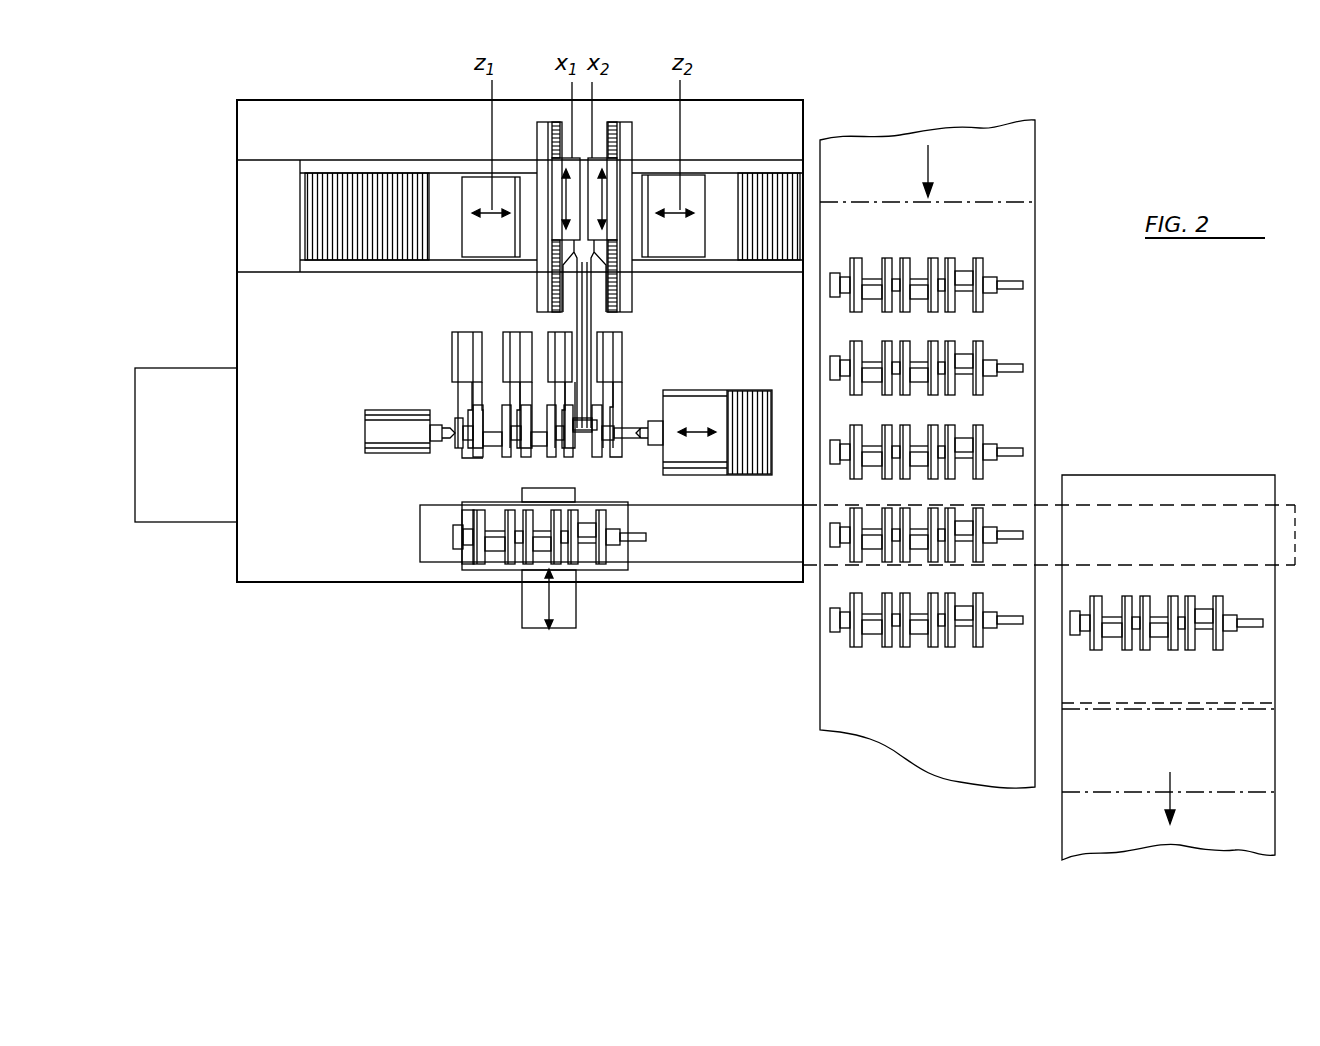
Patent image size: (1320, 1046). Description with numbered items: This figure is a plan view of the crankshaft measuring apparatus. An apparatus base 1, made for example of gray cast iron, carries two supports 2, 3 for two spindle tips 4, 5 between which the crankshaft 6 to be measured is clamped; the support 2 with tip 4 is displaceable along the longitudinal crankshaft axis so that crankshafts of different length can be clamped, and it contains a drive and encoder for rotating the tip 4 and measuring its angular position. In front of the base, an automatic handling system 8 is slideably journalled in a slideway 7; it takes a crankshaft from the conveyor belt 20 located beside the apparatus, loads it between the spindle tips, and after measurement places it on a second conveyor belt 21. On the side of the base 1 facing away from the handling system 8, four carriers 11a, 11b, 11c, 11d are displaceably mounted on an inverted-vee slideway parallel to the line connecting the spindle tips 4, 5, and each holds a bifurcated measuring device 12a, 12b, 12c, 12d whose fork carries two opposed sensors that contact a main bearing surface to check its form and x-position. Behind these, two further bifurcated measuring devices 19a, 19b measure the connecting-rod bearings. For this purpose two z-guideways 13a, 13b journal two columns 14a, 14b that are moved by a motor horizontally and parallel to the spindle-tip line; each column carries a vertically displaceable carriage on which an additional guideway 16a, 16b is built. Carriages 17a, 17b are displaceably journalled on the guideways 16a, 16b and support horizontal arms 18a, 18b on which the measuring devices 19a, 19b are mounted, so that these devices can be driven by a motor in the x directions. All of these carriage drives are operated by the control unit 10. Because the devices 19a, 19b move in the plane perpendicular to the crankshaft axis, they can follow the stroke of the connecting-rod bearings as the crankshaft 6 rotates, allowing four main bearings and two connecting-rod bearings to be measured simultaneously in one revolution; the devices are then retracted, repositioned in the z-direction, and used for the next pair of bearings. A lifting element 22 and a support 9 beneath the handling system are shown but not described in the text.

The apparatus base 1 is at (793, 118).
The support 2 is at (710, 392).
The support 3 is at (375, 425).
The spindle tip 4 is at (657, 425).
The spindle tip 5 is at (448, 425).
The crankshaft 6 is at (470, 458).
The slideway 7 is at (712, 545).
The automatic handling system 8 is at (610, 568).
The workpiece support 9 is at (468, 562).
The control unit 10 is at (185, 505).
The carrier 11a is at (507, 354).
The carrier 11b is at (482, 357).
The carrier 11c is at (548, 332).
The carrier 11d is at (627, 337).
The bifurcated measuring device 12a is at (470, 455).
The bifurcated measuring device 12b is at (520, 455).
The bifurcated measuring device 12c is at (560, 455).
The bifurcated measuring device 12d is at (615, 455).
The z-guideway 13a is at (443, 187).
The z-guideway 13b is at (728, 187).
The column 14a is at (478, 185).
The column 14b is at (697, 185).
The guideway 16a is at (548, 130).
The guideway 16b is at (623, 135).
The carriage 17a is at (568, 200).
The carriage 17b is at (600, 195).
The horizontal arm 18a is at (583, 296).
The horizontal arm 18b is at (632, 298).
The bifurcated measuring device 19a is at (578, 388).
The bifurcated measuring device 19b is at (590, 395).
The conveyor belt 20 is at (1038, 345).
The second conveyor belt 21 is at (1258, 765).
The lifting device 22 is at (580, 570).